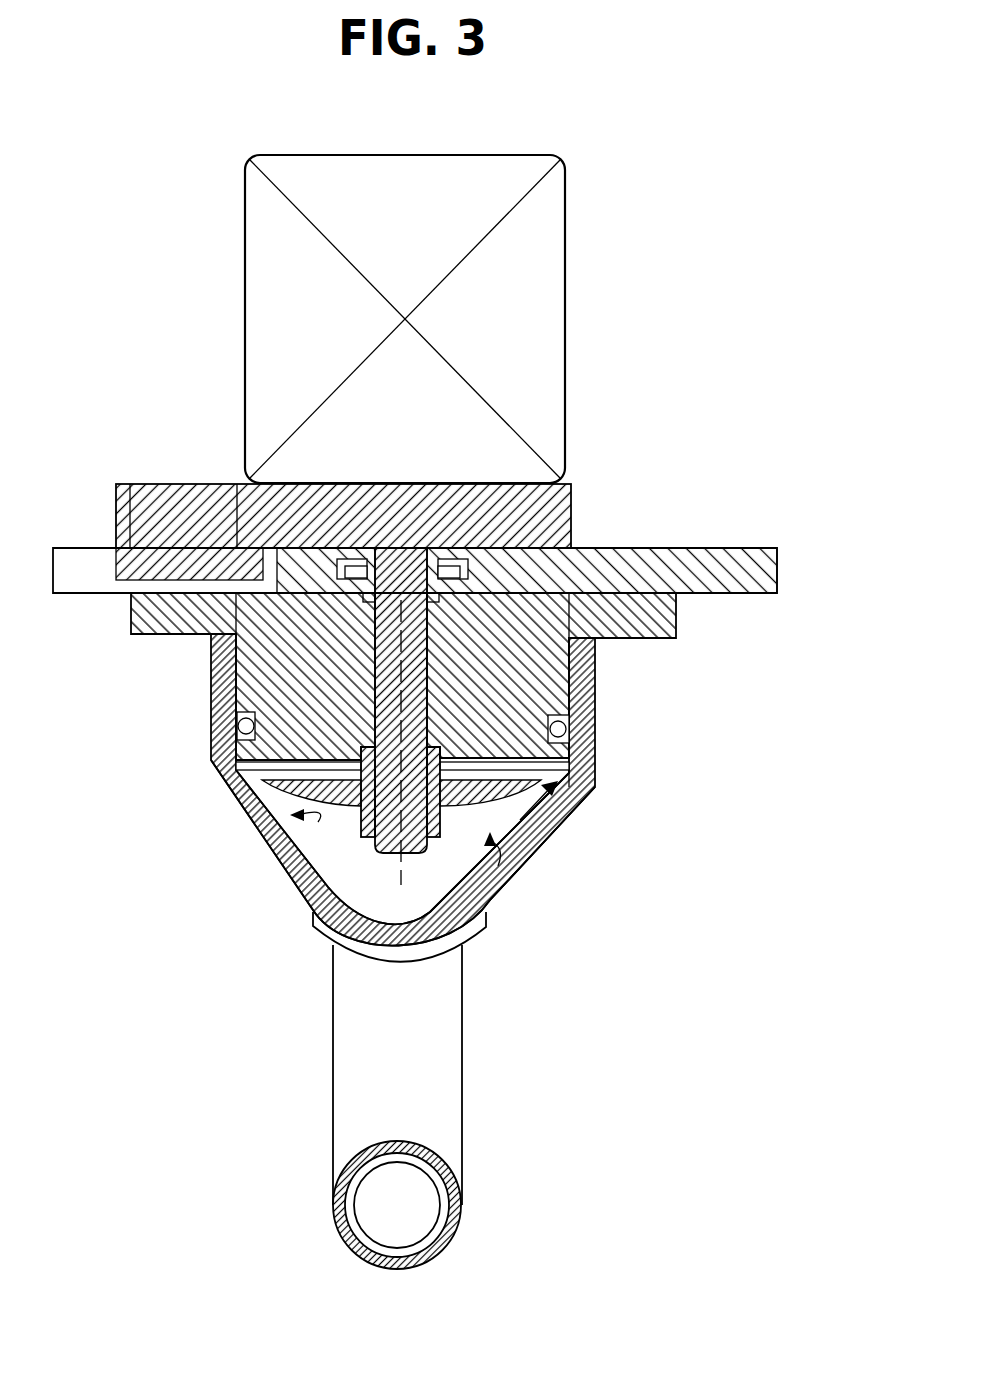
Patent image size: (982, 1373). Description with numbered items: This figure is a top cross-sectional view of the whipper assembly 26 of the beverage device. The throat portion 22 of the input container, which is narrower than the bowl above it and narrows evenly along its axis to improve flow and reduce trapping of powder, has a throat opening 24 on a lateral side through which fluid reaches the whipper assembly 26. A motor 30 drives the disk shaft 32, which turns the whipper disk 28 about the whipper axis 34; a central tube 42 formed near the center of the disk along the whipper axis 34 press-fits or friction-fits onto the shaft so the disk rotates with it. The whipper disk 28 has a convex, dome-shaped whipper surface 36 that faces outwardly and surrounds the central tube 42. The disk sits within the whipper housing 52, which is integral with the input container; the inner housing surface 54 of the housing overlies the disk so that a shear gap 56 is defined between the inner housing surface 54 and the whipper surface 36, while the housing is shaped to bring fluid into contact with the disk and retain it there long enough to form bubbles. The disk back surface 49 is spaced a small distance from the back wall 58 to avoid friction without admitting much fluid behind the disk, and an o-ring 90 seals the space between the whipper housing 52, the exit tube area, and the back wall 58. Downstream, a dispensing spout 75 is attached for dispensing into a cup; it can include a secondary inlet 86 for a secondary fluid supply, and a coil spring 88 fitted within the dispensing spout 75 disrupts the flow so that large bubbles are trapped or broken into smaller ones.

The throat portion 22 is at (523, 905).
The throat opening 24 is at (315, 910).
The whipper assembly 26 is at (515, 902).
The whipper disk 28 is at (520, 820).
The motor 30 is at (535, 292).
The disk shaft 32 is at (410, 487).
The whipper axis 34 is at (402, 872).
The whipper surface 36 is at (253, 793).
The central tube 42 is at (360, 825).
The disk back surface 49 is at (567, 773).
The whipper housing 52 is at (217, 755).
The inner housing surface 54 is at (280, 845).
The shear gap 56 is at (580, 787).
The back wall 58 is at (578, 758).
The dispensing spout 75 is at (437, 1047).
The secondary inlet 86 is at (408, 1210).
The coil spring 88 is at (433, 1163).
The o-ring 90 is at (247, 723).